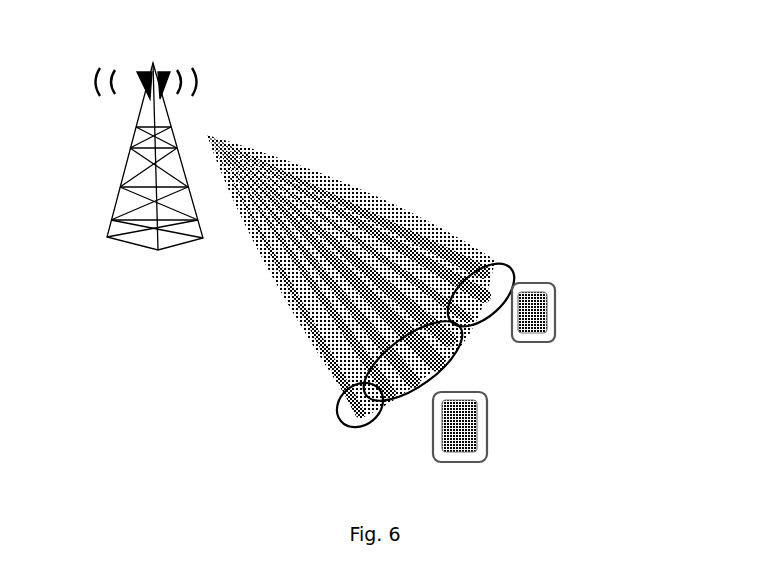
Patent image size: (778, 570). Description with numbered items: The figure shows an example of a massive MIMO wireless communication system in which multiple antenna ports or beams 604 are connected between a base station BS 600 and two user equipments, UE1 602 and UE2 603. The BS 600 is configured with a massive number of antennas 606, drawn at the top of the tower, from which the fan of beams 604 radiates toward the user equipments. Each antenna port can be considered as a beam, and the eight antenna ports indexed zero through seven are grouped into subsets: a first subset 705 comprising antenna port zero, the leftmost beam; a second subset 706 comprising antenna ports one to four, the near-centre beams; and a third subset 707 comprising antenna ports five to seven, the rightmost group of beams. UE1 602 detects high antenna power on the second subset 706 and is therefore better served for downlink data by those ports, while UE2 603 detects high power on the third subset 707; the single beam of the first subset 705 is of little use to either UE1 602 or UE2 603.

The BS 600 is at (120, 190).
The antennas 606 is at (165, 82).
The antenna ports or beams 604 is at (375, 197).
The third subset 707 is at (508, 263).
The second subset 706 is at (463, 368).
The first subset 705 is at (338, 417).
The UE2 603 is at (550, 303).
The UE1 602 is at (483, 443).